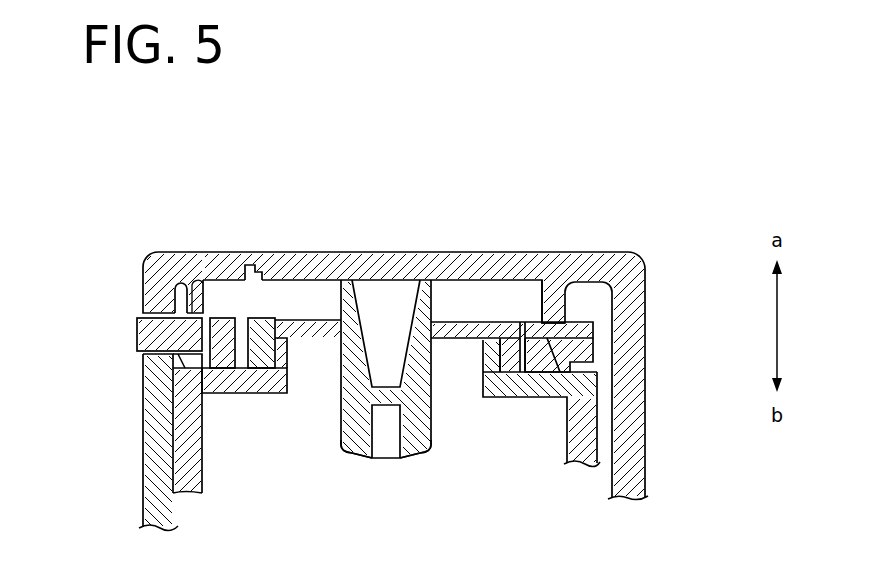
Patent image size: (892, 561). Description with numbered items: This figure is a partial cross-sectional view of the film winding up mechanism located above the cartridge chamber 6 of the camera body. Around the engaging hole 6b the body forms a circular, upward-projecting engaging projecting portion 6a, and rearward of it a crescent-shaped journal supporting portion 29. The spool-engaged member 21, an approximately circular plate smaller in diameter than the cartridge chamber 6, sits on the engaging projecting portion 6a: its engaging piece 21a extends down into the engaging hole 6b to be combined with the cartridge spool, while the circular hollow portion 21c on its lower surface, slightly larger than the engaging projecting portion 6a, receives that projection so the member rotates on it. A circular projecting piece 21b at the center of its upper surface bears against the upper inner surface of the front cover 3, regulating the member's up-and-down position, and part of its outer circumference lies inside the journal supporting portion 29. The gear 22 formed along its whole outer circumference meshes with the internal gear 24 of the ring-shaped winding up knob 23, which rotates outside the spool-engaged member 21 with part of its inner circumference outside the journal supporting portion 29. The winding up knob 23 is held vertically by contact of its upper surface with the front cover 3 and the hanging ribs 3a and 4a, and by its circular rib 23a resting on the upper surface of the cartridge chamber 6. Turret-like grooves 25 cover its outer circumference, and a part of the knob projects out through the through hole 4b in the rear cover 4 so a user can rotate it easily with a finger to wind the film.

The front cover 3 is at (644, 307).
The hanging rib 3a is at (577, 300).
The rear cover 4 is at (158, 268).
The hanging rib 4a is at (206, 260).
The journal supporting portion 29 is at (224, 313).
The spool-engaged member 21 is at (395, 351).
The engaging piece 21a is at (342, 436).
The circular projecting piece 21b is at (341, 284).
The circular hollow portion 21c is at (457, 342).
The gear 22 is at (513, 330).
The internal gear 24 is at (527, 330).
The turret-like grooves 25 is at (138, 323).
The winding up knob 23 is at (128, 311).
The circular rib 23a is at (570, 365).
The through hole 4b is at (144, 357).
The cartridge chamber 6 is at (409, 435).
The engaging projecting portion 6a is at (297, 383).
The engaging hole 6b is at (470, 362).